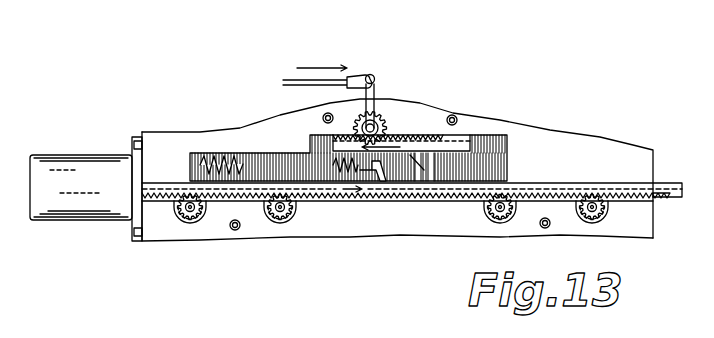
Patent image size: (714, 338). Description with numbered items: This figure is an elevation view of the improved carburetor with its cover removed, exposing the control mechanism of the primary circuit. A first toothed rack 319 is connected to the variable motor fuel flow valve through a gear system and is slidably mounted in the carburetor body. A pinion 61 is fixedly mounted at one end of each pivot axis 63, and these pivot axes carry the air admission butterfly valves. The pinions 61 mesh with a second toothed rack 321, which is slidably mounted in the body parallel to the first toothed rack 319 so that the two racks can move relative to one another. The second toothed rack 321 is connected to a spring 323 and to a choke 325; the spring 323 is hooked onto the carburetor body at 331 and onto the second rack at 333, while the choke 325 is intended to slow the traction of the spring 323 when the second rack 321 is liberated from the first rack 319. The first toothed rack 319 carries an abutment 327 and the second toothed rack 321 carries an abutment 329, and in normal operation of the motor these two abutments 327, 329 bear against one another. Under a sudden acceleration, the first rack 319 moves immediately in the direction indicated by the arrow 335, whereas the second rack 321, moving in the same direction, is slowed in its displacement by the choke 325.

The choke 325 is at (86, 172).
The spring hook point on carburetor body 331 is at (197, 160).
The spring 323 is at (200, 193).
The pivot axis 63 is at (280, 200).
The pinion 61 is at (274, 212).
The arrow 335 is at (400, 150).
The first toothed rack 319 is at (411, 180).
The abutment 329 is at (420, 180).
The abutment 327 is at (415, 165).
The spring hook point on second toothed rack 333 is at (398, 153).
The second toothed rack 321 is at (473, 186).